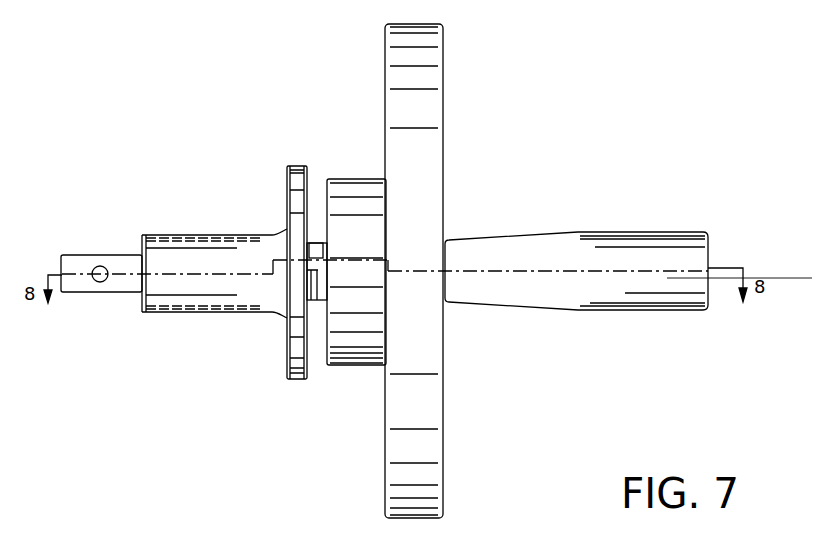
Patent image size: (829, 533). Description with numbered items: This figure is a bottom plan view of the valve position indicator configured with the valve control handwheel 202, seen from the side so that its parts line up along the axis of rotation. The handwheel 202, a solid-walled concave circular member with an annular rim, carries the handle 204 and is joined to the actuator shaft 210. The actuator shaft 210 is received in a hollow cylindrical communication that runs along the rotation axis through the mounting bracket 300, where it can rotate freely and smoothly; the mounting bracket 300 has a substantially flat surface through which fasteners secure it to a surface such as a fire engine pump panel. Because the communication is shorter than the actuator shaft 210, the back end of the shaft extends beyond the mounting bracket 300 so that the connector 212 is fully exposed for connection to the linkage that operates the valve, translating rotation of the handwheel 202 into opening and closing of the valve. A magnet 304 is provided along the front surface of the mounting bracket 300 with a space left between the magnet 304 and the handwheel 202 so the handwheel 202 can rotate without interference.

The handwheel 202 is at (416, 42).
The handle 204 is at (652, 243).
The actuator shaft 210 is at (74, 262).
The connector 212 is at (103, 267).
The mounting bracket 300 is at (203, 248).
The magnet 304 is at (317, 250).